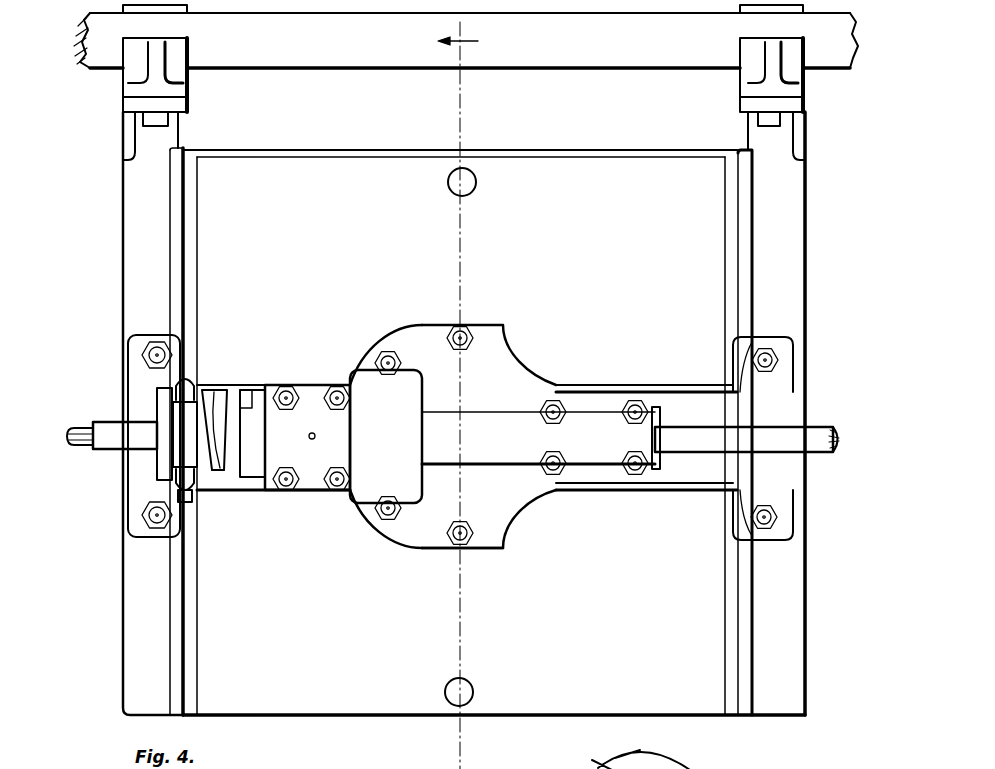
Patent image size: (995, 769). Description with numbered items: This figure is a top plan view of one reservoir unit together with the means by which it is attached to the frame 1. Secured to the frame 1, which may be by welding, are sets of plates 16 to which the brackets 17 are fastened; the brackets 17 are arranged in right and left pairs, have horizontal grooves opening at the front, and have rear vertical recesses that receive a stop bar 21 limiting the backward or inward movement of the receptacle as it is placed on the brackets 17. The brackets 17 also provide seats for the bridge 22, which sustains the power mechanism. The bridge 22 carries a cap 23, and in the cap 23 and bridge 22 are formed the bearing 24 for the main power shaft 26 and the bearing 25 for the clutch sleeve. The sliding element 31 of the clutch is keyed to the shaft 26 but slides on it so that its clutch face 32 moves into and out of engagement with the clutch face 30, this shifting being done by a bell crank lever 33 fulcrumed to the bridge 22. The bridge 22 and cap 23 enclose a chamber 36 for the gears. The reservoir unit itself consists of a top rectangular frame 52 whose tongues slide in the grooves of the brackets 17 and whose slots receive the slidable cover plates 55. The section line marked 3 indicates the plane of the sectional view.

The frame 1 is at (466, 40).
The section line 3 is at (463, 400).
The plates 16 is at (188, 114).
The brackets 17 is at (464, 413).
The stop bar 21 is at (258, 150).
The bridge 22 is at (674, 438).
The cap 23 is at (524, 372).
The bearing 24 is at (541, 438).
The bearing 25 is at (307, 437).
The main power shaft 26 is at (466, 437).
The clutch face 30 is at (259, 478).
The sliding element 31 is at (232, 420).
The clutch face 32 is at (217, 472).
The bell crank lever 33 is at (86, 425).
The chamber 36 is at (462, 511).
The top rectangular frame 52 is at (726, 259).
The cover plates 55 is at (605, 145).